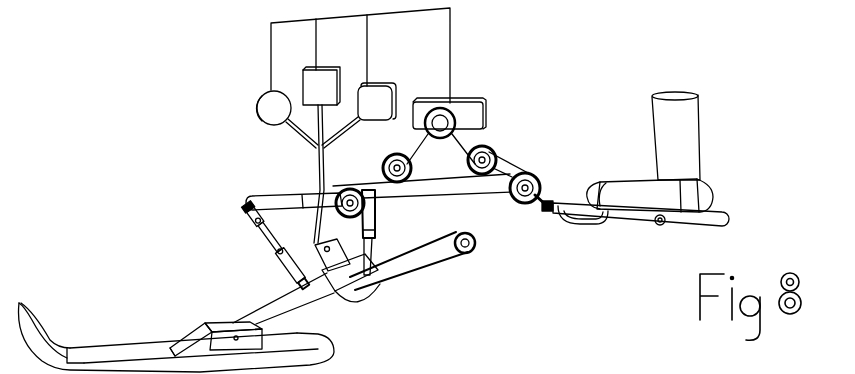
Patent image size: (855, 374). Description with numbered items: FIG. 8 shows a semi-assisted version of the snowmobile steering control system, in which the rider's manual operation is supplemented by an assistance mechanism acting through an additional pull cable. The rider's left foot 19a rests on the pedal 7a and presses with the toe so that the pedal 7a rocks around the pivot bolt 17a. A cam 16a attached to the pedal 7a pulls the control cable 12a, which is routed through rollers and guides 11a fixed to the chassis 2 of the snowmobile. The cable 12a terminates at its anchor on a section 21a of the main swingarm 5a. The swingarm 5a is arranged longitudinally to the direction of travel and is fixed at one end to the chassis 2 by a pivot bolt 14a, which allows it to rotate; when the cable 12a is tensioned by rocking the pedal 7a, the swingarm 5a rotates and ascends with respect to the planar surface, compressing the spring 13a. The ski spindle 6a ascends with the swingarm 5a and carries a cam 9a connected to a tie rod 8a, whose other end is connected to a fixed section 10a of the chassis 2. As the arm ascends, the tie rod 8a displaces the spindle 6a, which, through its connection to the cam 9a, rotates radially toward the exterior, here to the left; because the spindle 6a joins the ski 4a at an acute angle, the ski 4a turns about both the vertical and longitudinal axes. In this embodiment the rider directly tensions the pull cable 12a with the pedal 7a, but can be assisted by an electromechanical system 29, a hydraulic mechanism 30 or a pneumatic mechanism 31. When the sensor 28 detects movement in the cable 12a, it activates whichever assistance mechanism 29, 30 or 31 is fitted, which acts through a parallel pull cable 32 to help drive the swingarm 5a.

The chassis 2 is at (290, 200).
The ski 4a is at (143, 353).
The main swingarm 5a is at (397, 273).
The ski spindle 6a is at (280, 308).
The pedal 7a is at (712, 213).
The tie rod 8a is at (270, 245).
The cam 9a is at (298, 285).
The fixed section 10a is at (245, 205).
The rollers and guides 11a is at (514, 196).
The control cable 12a is at (512, 172).
The spring 13a is at (373, 241).
The pivot bolt 14a is at (477, 248).
The cam 16a is at (553, 212).
The pivot bolt 17a is at (667, 225).
The left foot 19a is at (643, 204).
The section of the main swingarm 21a is at (313, 250).
The sensor 28 is at (485, 101).
The electromechanical system 29 is at (274, 108).
The hydraulic mechanism 30 is at (321, 86).
The pneumatic mechanism 31 is at (377, 101).
The parallel pull cable 32 is at (318, 168).